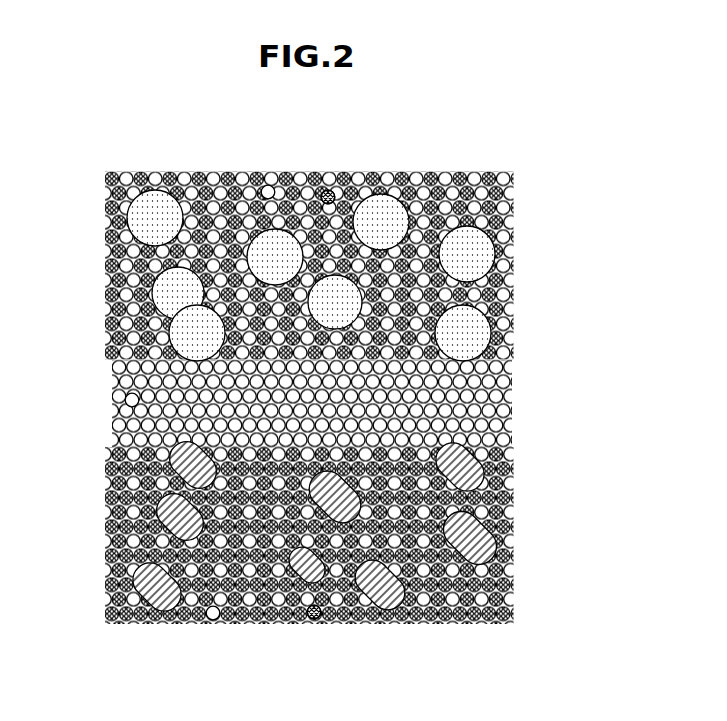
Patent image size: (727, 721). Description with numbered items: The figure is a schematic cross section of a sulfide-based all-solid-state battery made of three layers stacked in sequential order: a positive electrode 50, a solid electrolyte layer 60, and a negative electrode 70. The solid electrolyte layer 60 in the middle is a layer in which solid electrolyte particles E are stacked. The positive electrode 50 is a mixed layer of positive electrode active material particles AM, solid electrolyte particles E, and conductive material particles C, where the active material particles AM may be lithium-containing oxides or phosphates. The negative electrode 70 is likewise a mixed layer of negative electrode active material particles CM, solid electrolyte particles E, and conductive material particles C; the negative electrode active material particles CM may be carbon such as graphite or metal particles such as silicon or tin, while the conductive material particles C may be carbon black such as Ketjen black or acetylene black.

The negative electrode 70 is at (347, 228).
The solid electrolyte layer 60 is at (549, 362).
The positive electrode 50 is at (347, 570).
The negative electrode active material particles CM is at (157, 208).
The solid electrolyte particles E is at (268, 185).
The conductive material particles C is at (326, 190).
The positive electrode active material particles AM is at (395, 622).